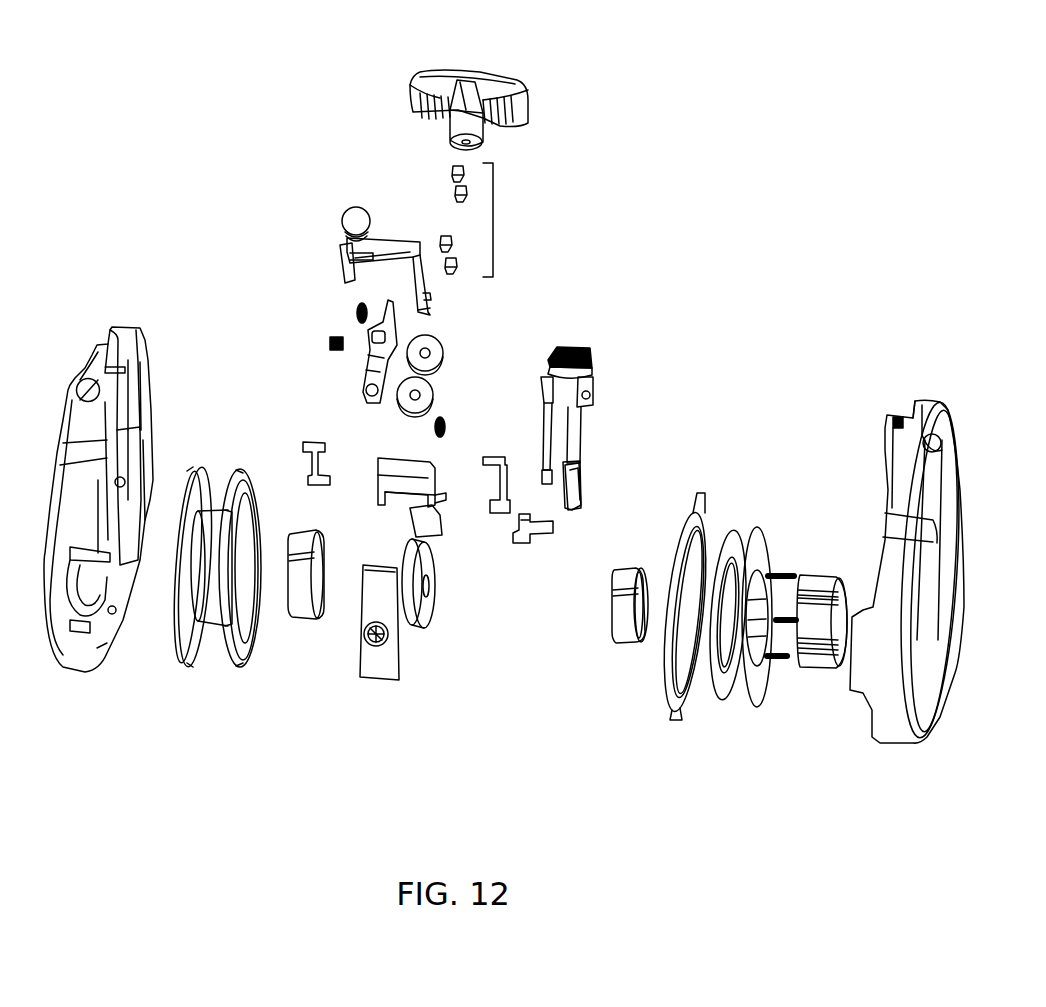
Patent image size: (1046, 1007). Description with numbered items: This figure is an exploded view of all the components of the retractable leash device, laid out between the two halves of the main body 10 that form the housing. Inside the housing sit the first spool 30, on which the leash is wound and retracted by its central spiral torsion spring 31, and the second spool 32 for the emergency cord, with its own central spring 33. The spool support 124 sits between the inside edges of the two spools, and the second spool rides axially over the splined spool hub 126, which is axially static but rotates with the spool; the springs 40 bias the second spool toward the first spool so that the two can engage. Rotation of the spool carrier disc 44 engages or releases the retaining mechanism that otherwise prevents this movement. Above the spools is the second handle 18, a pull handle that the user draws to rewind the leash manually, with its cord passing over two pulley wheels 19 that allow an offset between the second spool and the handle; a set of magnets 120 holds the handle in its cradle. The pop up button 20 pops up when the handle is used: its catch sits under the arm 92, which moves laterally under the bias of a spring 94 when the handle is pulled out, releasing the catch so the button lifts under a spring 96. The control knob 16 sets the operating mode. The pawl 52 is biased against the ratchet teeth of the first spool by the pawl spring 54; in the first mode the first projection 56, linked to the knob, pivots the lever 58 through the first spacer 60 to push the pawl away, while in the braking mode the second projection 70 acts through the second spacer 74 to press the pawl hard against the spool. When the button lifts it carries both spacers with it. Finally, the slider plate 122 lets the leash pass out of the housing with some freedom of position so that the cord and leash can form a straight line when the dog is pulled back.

The main body 10 is at (85, 672).
The control knob 16 is at (592, 352).
The second handle 18 is at (529, 100).
The pulley wheels 19 is at (433, 383).
The pop up button 20 is at (351, 209).
The first spool 30 is at (228, 668).
The spiral torsion spring 31 is at (308, 619).
The second spool 32 is at (742, 700).
The central spring 33 is at (623, 643).
The springs 40 is at (775, 661).
The spool carrier disc 44 is at (676, 715).
The pawl 52 is at (380, 448).
The pawl spring 54 is at (443, 420).
The first projection 56 is at (580, 490).
The lever 58 is at (543, 530).
The first spacer 60 is at (493, 512).
The second projection 70 is at (541, 477).
The second spacer 74 is at (310, 440).
The arm 92 is at (367, 373).
The spring 94 is at (328, 342).
The spring 96 is at (353, 308).
The set of magnets 120 is at (493, 220).
The slider plate 122 is at (385, 680).
The spool support 124 is at (417, 627).
The spool hub 126 is at (823, 577).